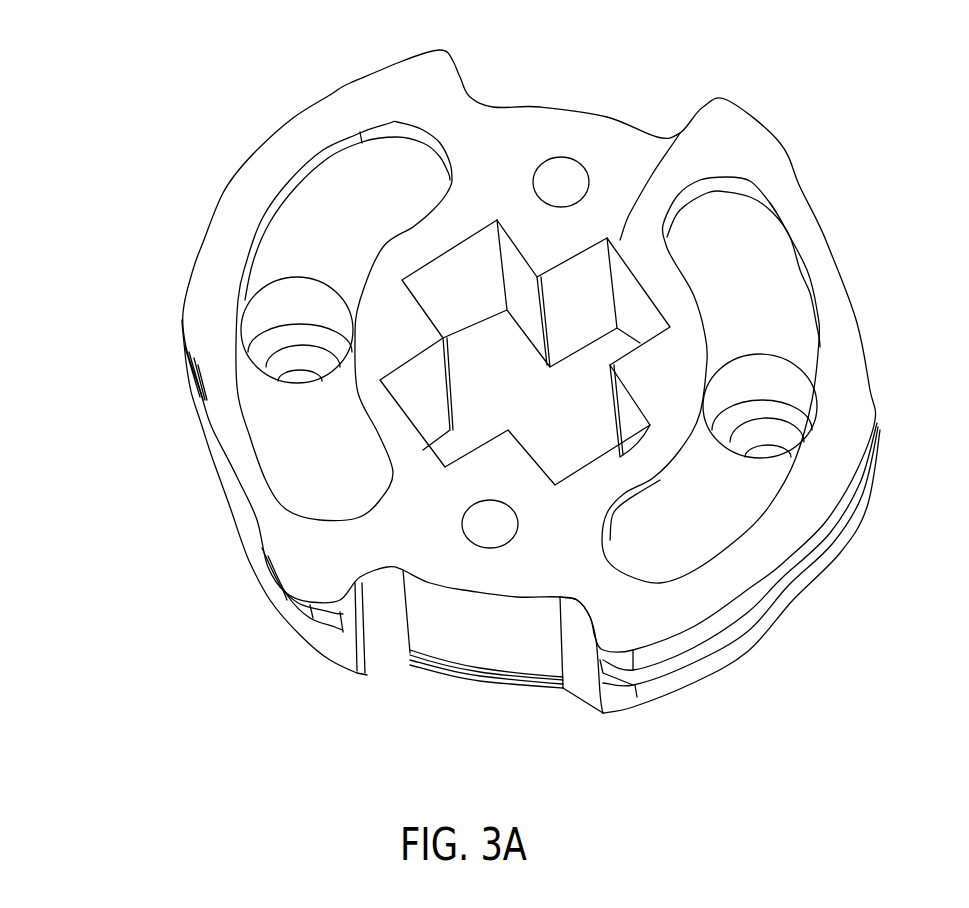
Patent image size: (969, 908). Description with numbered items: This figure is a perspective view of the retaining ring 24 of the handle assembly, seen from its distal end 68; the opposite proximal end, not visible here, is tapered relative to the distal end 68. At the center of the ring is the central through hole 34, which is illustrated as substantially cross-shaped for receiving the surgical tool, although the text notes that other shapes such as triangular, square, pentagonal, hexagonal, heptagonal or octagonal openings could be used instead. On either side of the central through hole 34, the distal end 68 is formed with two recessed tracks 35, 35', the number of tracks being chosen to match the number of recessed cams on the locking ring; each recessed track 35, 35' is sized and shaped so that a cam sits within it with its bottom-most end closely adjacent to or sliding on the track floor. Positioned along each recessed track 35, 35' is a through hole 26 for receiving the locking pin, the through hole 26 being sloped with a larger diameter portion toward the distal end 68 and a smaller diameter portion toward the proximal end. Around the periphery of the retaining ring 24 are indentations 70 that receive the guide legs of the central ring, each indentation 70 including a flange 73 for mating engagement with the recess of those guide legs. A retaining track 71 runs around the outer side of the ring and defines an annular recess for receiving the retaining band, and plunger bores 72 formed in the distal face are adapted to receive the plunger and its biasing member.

The retaining ring 24 is at (110, 111).
The distal end 68 is at (318, 120).
The indentation 70 is at (465, 74).
The plunger bore 72 is at (580, 157).
The central through hole 34 is at (677, 137).
The recessed track 35 is at (719, 380).
The recessed track 35' is at (306, 320).
The through hole 26 is at (260, 287).
The flange 73 is at (460, 673).
The retaining track 71 is at (667, 663).